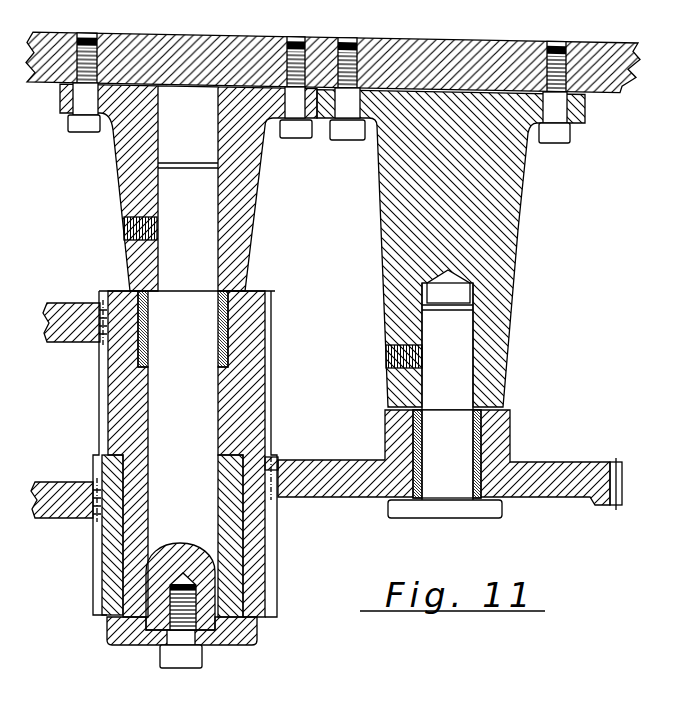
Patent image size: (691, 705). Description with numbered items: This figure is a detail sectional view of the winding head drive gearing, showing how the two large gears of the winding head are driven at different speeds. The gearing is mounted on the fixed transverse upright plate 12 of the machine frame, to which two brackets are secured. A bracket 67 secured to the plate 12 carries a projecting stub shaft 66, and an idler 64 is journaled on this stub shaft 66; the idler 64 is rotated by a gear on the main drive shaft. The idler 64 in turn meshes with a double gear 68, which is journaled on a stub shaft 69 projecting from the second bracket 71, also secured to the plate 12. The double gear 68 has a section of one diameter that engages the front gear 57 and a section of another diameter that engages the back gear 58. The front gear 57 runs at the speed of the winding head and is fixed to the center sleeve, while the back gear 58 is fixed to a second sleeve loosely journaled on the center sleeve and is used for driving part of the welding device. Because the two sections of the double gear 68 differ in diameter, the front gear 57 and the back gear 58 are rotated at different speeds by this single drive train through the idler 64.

The transverse upright plate 12 is at (183, 34).
The bracket 71 is at (253, 199).
The bracket 67 is at (517, 233).
The double gear 68 is at (255, 335).
The stub shaft 69 is at (203, 415).
The stub shaft 66 is at (457, 357).
The idler 64 is at (348, 480).
The back gear 58 is at (65, 342).
The front gear 57 is at (60, 510).